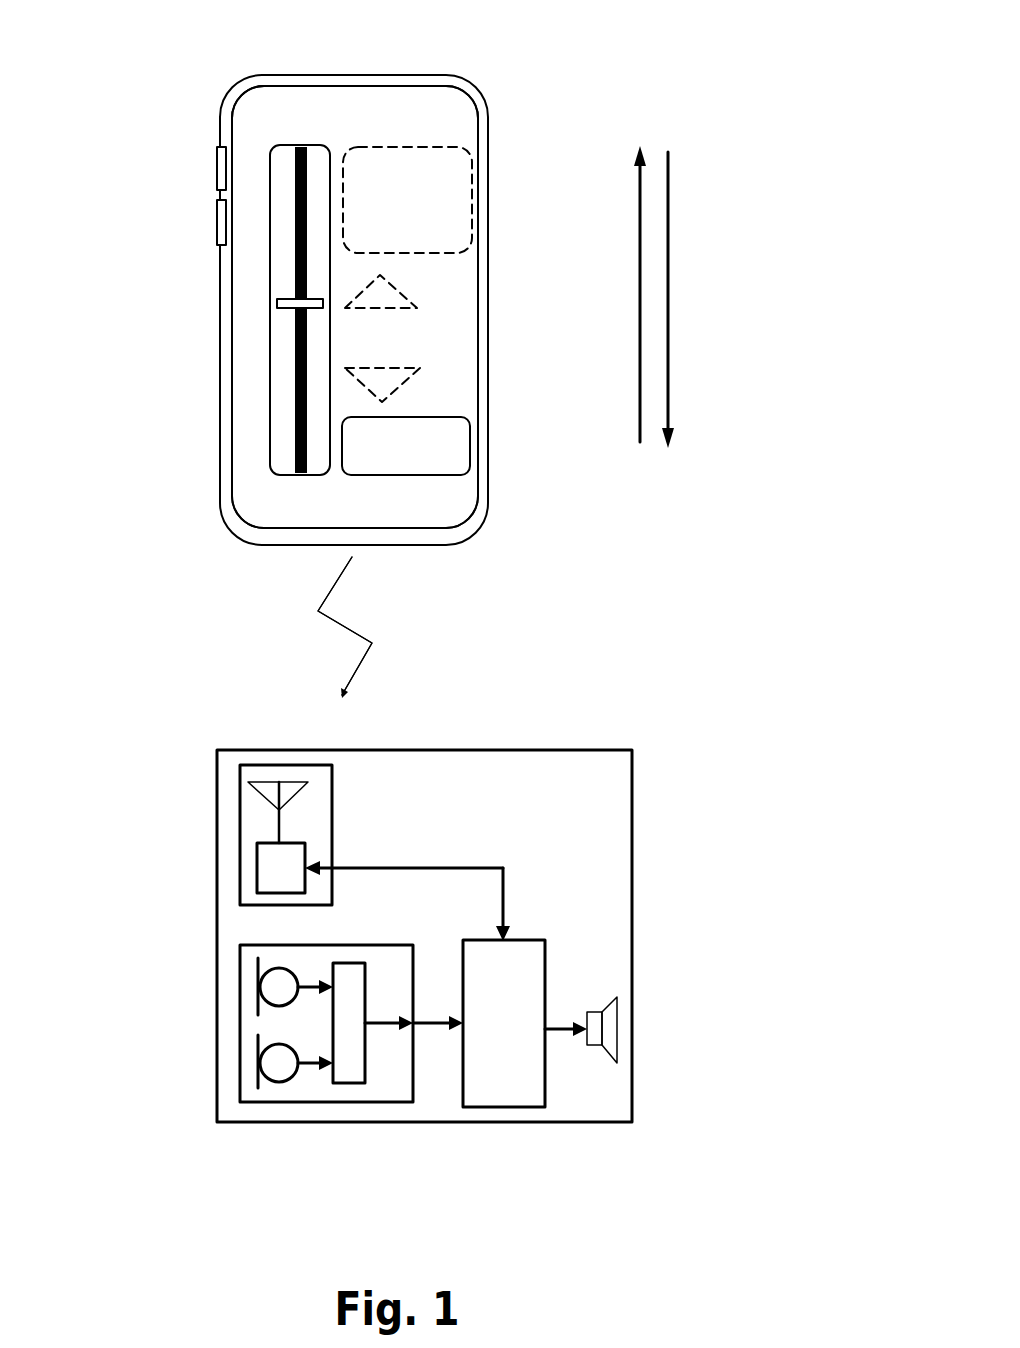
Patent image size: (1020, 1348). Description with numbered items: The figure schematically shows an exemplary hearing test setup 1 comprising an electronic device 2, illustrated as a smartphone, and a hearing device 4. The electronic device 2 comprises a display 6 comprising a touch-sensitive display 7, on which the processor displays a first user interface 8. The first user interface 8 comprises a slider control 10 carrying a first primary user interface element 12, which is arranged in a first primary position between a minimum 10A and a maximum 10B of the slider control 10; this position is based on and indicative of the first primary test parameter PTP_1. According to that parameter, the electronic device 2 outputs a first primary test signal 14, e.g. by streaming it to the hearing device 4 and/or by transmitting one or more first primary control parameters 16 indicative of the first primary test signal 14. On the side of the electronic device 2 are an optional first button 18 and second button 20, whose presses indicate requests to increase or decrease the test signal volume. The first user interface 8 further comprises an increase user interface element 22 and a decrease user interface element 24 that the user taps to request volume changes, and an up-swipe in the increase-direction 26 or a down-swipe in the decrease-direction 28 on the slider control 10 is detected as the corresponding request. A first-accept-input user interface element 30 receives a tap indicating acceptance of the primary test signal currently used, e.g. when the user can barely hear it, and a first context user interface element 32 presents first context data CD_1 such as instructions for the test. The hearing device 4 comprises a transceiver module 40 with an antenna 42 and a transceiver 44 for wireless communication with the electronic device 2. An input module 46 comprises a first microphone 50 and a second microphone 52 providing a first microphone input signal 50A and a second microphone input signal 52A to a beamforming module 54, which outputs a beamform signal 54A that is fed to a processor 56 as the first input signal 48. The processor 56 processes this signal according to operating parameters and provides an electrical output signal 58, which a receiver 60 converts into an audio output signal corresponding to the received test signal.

The hearing test setup 1 is at (668, 580).
The electronic device 2 is at (488, 340).
The hearing device 4 is at (632, 815).
The display 6 is at (452, 305).
The touch-sensitive display 7 is at (355, 307).
The first user interface 8 is at (390, 98).
The slider control 10 is at (270, 437).
The minimum 10A is at (295, 476).
The maximum 10B is at (295, 145).
The first primary user interface element 12 is at (278, 303).
The first primary test signal 14 is at (337, 627).
The first primary control parameters 16 is at (345, 626).
The first button 18 is at (218, 178).
The second button 20 is at (218, 240).
The increase user interface element 22 is at (418, 307).
The decrease user interface element 24 is at (408, 378).
The increase-direction 26 is at (640, 397).
The decrease-direction 28 is at (668, 390).
The first-accept-input user interface element 30 is at (398, 475).
The first context user interface element 32 is at (443, 148).
The transceiver module 40 is at (305, 845).
The antenna 42 is at (300, 790).
The transceiver 44 is at (258, 870).
The input module 46 is at (268, 947).
The first input signal 48 is at (440, 1045).
The first microphone 50 is at (263, 985).
The first microphone input signal 50A is at (313, 985).
The second microphone 52 is at (263, 1058).
The second microphone input signal 52A is at (312, 1067).
The beamforming module 54 is at (352, 1087).
The beamform signal 54A is at (382, 1040).
The processor 56 is at (507, 1107).
The electrical output signal 58 is at (565, 1029).
The receiver 60 is at (608, 1043).